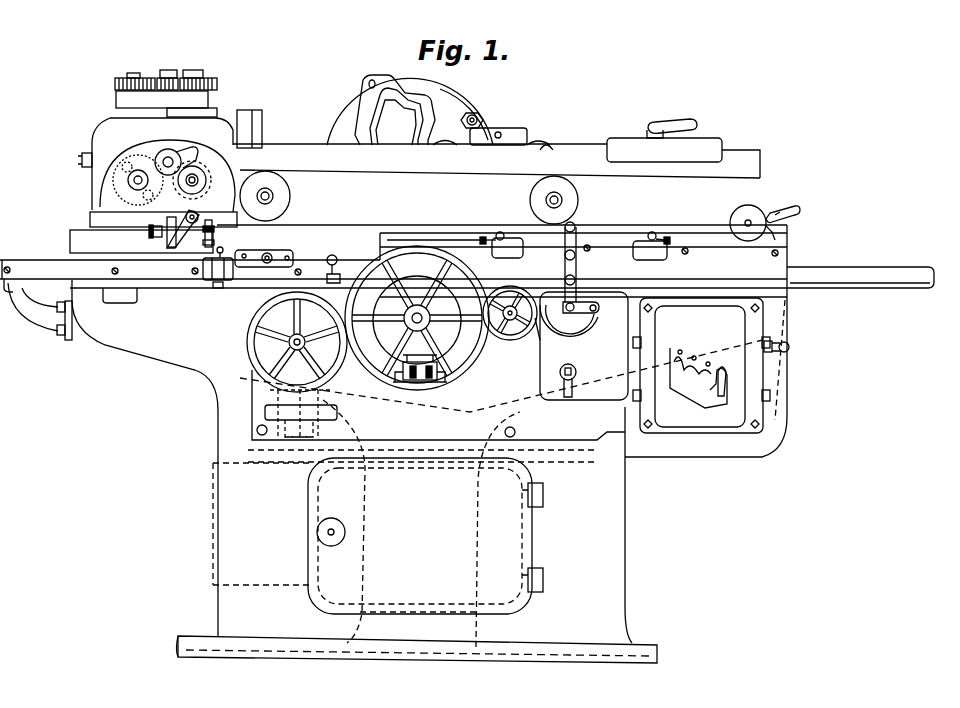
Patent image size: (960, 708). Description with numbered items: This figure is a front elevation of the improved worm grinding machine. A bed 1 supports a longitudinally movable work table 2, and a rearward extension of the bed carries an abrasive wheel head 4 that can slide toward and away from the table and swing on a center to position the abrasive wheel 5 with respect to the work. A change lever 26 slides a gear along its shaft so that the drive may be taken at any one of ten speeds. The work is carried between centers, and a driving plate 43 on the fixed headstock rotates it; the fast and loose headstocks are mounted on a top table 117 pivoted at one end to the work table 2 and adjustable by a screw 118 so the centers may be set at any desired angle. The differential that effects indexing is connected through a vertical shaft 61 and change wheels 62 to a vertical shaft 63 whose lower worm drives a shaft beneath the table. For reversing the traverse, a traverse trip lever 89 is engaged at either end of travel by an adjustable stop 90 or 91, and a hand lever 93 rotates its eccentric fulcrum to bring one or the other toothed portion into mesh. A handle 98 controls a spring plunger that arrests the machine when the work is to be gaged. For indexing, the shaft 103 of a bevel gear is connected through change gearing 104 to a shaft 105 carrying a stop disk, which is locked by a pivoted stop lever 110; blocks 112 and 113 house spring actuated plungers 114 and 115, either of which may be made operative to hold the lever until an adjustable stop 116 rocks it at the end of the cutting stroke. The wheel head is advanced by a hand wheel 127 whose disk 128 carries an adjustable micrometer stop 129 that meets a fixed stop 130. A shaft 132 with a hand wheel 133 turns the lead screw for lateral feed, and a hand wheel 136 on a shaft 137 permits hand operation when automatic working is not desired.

The bed 1 is at (218, 425).
The work table 2 is at (828, 272).
The abrasive wheel head 4 is at (335, 118).
The abrasive wheel 5 is at (454, 112).
The change lever 26 is at (713, 392).
The driving plate 43 is at (262, 122).
The vertical shaft 61 is at (137, 78).
The change wheels 62 is at (114, 83).
The vertical shaft 63 is at (198, 73).
The traverse trip lever 89 is at (576, 232).
The adjustable stop 90 is at (656, 238).
The adjustable stop 91 is at (502, 238).
The hand lever 93 is at (580, 310).
The handle 98 is at (575, 385).
The shaft 103 is at (138, 180).
The change gearing 104 is at (158, 156).
The shaft 105 is at (205, 181).
The stop lever 110 is at (197, 250).
The block 112 is at (162, 237).
The block 113 is at (218, 232).
The spring actuated plunger 114 is at (194, 240).
The spring actuated plunger 115 is at (209, 222).
The adjustable stop 116 is at (224, 250).
The top table 117 is at (392, 229).
The screw 118 is at (752, 222).
The hand wheel 127 is at (412, 383).
The disk 128 is at (388, 352).
The adjustable micrometer stop 129 is at (428, 380).
The fixed stop 130 is at (416, 383).
The shaft 132 is at (510, 318).
The hand wheel 133 is at (522, 333).
The hand wheel 136 is at (248, 341).
The shaft 137 is at (292, 342).